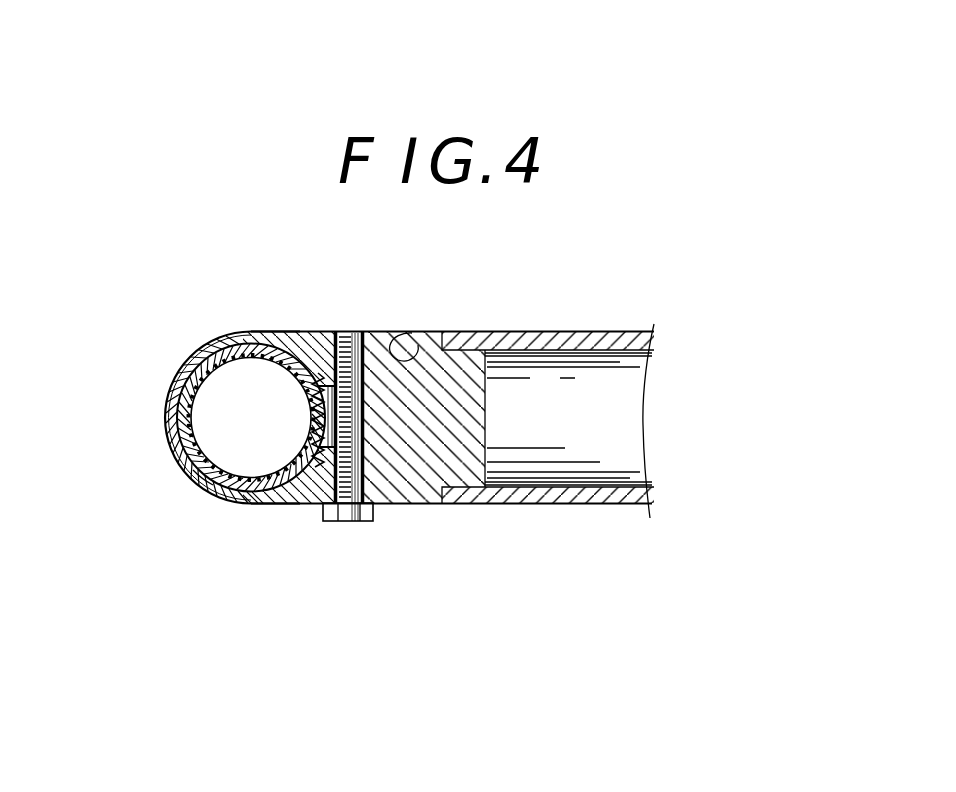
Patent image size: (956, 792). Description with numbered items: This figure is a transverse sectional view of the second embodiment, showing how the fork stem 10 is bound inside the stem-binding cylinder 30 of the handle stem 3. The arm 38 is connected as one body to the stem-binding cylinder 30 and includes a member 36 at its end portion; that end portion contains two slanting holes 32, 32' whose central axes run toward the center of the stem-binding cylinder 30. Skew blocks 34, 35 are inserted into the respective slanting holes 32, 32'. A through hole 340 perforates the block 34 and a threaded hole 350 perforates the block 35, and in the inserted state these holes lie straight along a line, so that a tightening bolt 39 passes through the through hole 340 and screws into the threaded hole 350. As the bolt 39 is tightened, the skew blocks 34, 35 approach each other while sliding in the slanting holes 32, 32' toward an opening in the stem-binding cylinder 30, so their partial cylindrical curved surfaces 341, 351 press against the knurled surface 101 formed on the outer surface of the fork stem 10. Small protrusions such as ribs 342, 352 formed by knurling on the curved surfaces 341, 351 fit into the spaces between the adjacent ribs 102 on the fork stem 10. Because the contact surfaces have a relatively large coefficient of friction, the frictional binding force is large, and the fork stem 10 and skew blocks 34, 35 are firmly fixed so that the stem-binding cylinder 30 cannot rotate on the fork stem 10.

The handle stem 3 is at (279, 506).
The fork stem 10 is at (167, 447).
The knurled surface 101 is at (196, 483).
The ribs 102 is at (167, 393).
The stem-binding cylinder 30 is at (196, 470).
The slanting hole 32 is at (444, 458).
The slanting hole 32' is at (465, 334).
The skew block 34 is at (372, 476).
The through hole 340 is at (313, 505).
The partial cylindrical curved surface 341 is at (256, 470).
The ribs 342 is at (307, 447).
The skew block 35 is at (325, 347).
The threaded hole 350 is at (362, 343).
The partial cylindrical curved surface 351 is at (258, 348).
The ribs 352 is at (316, 380).
The member 36 is at (512, 348).
The arm 38 is at (528, 498).
The tightening bolt 39 is at (358, 507).